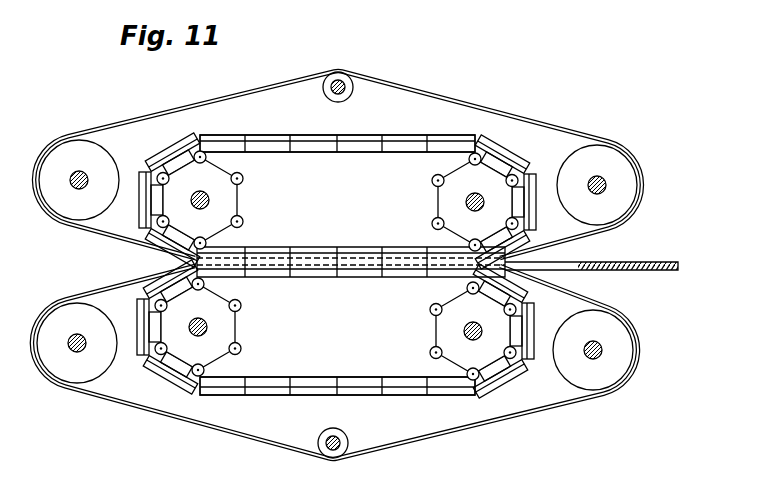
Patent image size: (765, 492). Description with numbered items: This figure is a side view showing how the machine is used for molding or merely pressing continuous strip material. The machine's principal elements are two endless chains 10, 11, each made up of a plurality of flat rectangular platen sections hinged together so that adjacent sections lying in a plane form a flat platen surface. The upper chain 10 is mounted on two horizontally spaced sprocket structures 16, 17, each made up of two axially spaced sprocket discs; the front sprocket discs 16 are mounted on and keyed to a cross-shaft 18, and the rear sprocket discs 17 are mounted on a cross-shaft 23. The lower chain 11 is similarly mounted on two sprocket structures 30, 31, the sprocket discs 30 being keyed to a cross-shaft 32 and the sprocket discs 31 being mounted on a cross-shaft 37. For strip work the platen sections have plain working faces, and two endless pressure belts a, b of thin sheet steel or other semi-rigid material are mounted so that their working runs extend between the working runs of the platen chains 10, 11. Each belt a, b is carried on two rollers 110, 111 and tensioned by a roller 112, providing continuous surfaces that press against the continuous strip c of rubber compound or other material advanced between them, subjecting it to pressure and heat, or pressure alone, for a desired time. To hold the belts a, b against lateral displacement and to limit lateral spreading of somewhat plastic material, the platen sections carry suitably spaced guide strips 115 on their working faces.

The endless chain 10 is at (321, 162).
The endless chain 11 is at (326, 371).
The sprocket structure 16 is at (440, 193).
The sprocket structure 17 is at (222, 167).
The cross-shaft 18 is at (467, 204).
The cross-shaft 23 is at (212, 200).
The sprocket structure 30 is at (450, 328).
The sprocket structure 31 is at (223, 337).
The cross-shaft 32 is at (467, 337).
The cross-shaft 37 is at (207, 323).
The roller 110 is at (91, 152).
The roller 111 is at (620, 170).
The roller 112 is at (355, 92).
The guide strips 115 is at (350, 135).
The pressure belt a is at (256, 80).
The pressure belt b is at (532, 413).
The continuous strip c is at (652, 263).